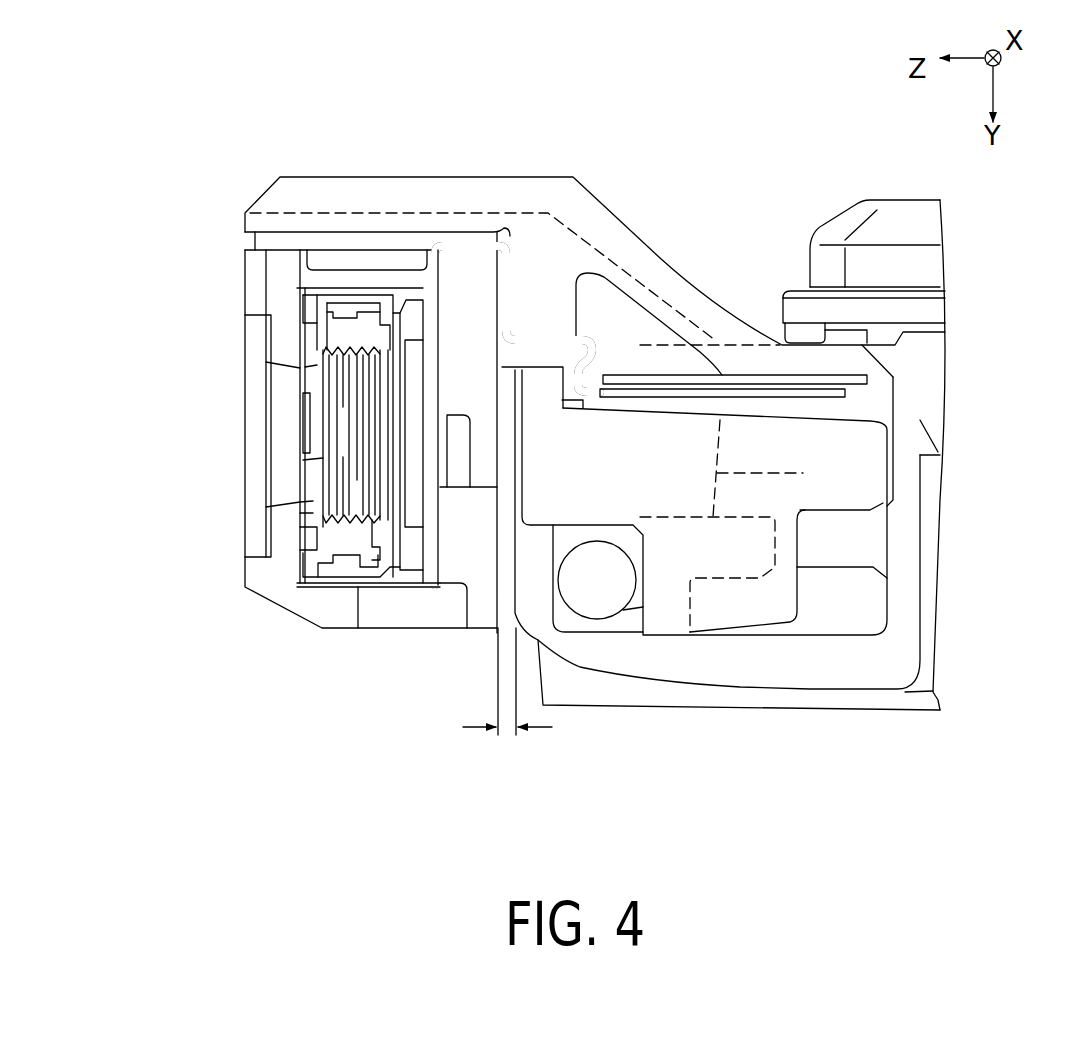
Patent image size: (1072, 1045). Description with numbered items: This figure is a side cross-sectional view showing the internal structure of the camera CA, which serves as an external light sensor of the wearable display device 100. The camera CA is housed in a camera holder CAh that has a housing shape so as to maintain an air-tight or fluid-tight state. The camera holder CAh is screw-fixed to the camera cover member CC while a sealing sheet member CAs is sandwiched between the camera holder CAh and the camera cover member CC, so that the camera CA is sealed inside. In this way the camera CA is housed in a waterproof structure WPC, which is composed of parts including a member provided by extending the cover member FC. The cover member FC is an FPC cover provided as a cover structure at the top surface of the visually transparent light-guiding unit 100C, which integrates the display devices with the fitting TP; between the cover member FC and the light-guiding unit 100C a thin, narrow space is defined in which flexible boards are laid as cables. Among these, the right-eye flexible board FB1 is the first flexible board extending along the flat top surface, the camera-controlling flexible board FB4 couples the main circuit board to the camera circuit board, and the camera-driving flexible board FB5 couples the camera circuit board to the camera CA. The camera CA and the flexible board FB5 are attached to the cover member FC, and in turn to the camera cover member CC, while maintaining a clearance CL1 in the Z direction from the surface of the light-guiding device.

The wearable display device 100 is at (214, 112).
The visually transparent light-guiding unit 100C is at (466, 749).
The waterproof structure WPC is at (216, 258).
The camera CA is at (214, 411).
The sealing sheet member CAs is at (352, 243).
The camera holder CAh is at (375, 622).
The camera cover member CC is at (433, 190).
The cover member FC is at (673, 292).
The right-eye flexible board FB1 is at (837, 392).
The camera-controlling flexible board FB4 is at (760, 375).
The camera-driving flexible board FB5 is at (547, 335).
The fitting TP is at (952, 543).
The clearance CL1 is at (507, 735).